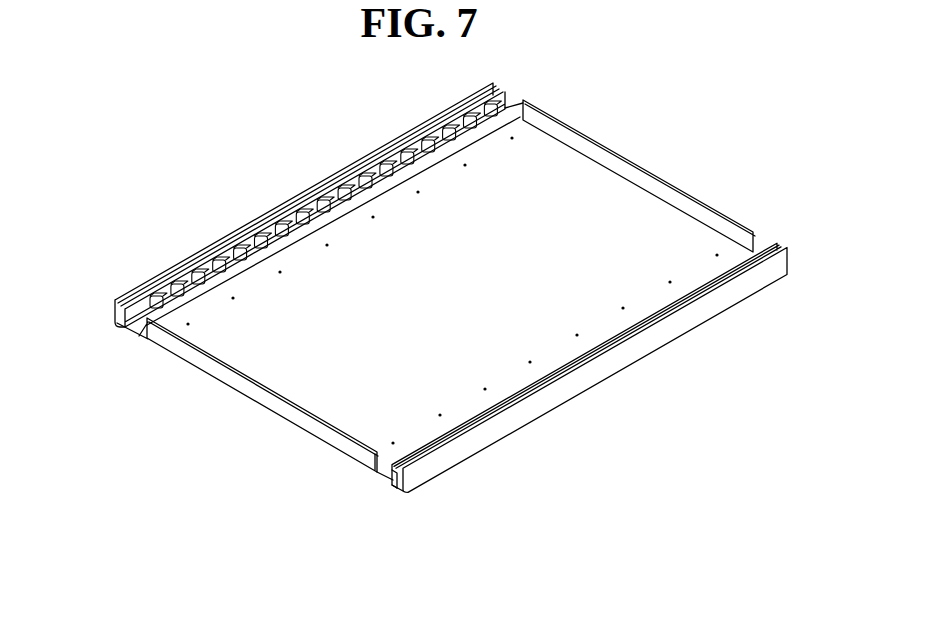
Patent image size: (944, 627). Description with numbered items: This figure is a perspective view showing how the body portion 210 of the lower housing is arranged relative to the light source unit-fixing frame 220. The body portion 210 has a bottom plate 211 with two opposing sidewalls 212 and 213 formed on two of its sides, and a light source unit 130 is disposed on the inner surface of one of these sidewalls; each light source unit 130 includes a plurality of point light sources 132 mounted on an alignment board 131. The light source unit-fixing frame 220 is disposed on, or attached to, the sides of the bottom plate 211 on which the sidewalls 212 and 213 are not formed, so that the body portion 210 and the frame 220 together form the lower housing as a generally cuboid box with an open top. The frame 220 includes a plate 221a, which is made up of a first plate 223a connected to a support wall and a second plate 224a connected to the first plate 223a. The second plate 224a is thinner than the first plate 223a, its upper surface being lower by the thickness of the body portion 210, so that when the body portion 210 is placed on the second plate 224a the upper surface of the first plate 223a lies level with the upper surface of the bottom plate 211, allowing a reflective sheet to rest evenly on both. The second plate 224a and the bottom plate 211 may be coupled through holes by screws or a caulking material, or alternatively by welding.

The light source unit 130 is at (282, 205).
The alignment board 131 is at (125, 290).
The point light sources 132 is at (306, 204).
The body portion 210 is at (448, 282).
The bottom plate 211 is at (583, 187).
The sidewall 212 is at (248, 385).
The sidewall 213 is at (648, 182).
The light source unit-fixing frame 220 is at (560, 379).
The plate 221a is at (285, 540).
The first plate 223a is at (377, 474).
The second plate 224a is at (365, 468).